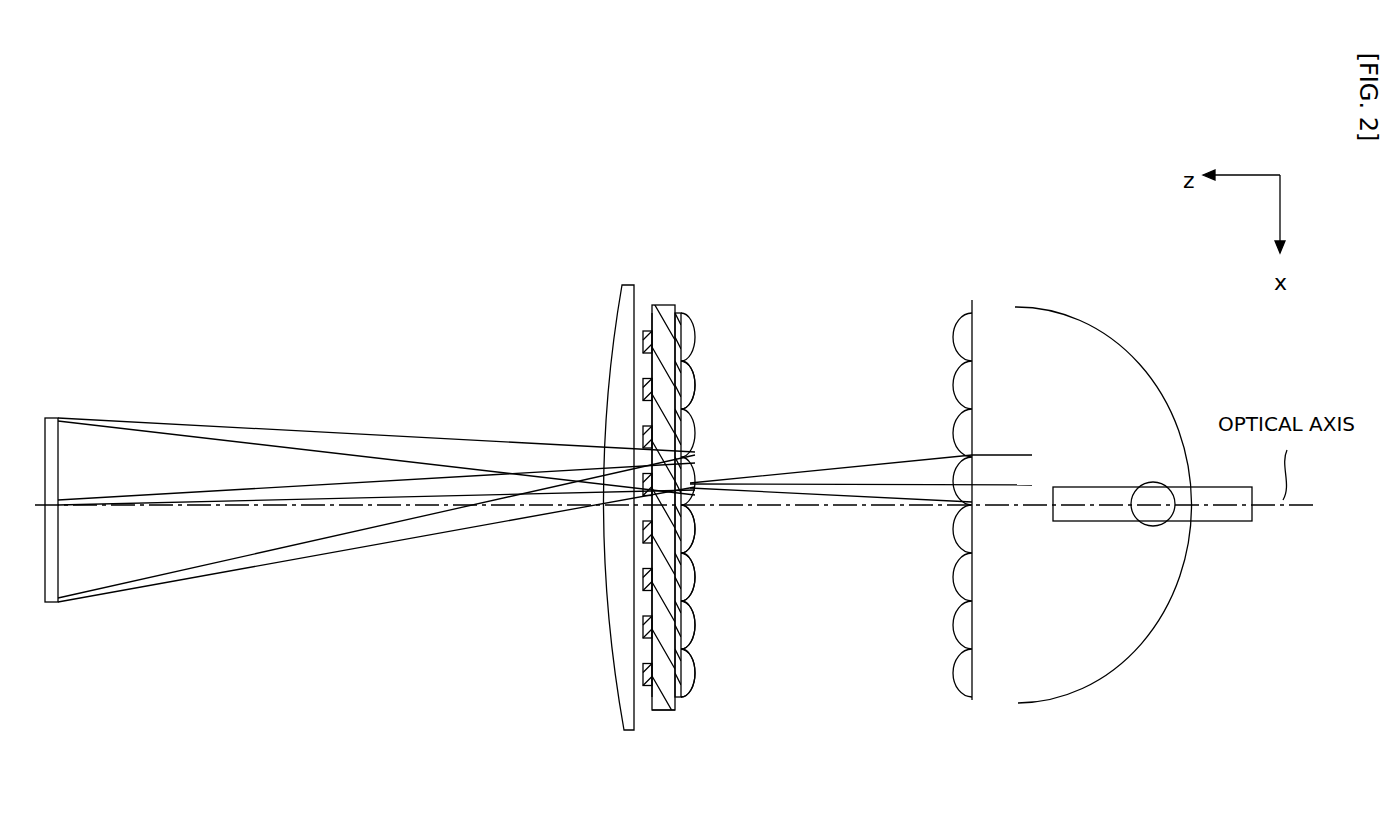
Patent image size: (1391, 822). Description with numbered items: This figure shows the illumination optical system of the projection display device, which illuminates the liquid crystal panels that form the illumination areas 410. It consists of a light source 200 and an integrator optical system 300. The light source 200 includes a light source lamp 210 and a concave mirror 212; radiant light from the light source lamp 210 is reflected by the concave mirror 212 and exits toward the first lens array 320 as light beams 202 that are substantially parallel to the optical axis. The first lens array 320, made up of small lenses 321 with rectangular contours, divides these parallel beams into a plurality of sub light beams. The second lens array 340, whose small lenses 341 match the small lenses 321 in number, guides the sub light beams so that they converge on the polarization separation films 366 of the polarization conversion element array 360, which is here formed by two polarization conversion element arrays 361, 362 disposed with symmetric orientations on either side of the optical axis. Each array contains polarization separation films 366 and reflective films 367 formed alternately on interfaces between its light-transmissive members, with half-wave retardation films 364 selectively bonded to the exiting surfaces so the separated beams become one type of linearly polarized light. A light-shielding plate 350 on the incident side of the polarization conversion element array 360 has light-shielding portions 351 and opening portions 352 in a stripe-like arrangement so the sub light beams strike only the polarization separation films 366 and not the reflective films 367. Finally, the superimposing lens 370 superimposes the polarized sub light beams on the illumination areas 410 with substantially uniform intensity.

The light source 200 is at (1122, 296).
The light beam 202 is at (853, 467).
The light source lamp 210 is at (1182, 525).
The concave mirror 212 is at (1143, 372).
The integrator optical system 300 is at (815, 172).
The first lens array 320 is at (972, 300).
The small lens 321 is at (955, 340).
The second lens array 340 is at (691, 322).
The small lens 341 is at (695, 383).
The light-shielding plate 350 is at (678, 318).
The light-shielding portion 351 is at (695, 530).
The opening portion 352 is at (695, 574).
The polarization conversion element array 360 is at (658, 297).
The polarization conversion element array 361 is at (645, 322).
The polarization conversion element array 362 is at (670, 712).
The λ/2 retardation film 364 is at (643, 390).
The polarization separation film 366 is at (690, 624).
The reflective film 367 is at (695, 666).
The superimposing lens 370 is at (611, 355).
The illumination area 410 is at (58, 603).